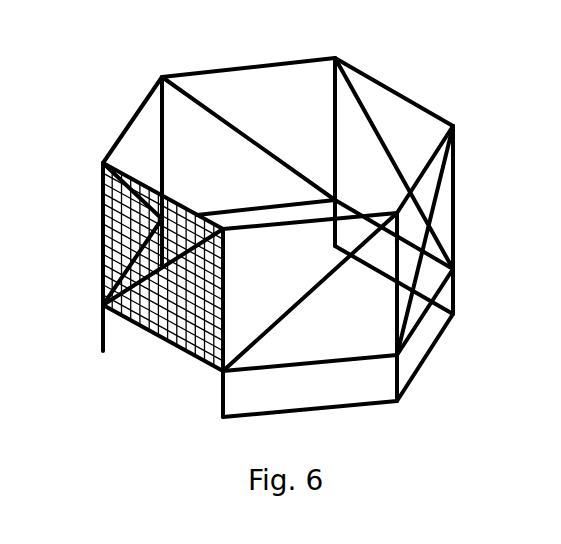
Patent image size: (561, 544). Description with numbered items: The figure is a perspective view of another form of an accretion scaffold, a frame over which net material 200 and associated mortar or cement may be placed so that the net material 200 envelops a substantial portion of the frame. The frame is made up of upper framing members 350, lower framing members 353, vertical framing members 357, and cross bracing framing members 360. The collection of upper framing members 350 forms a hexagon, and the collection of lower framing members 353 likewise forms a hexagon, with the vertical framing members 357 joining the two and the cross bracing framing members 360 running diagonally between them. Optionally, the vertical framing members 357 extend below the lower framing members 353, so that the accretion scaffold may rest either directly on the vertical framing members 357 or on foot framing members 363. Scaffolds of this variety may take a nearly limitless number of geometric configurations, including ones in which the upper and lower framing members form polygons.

The net material 200 is at (104, 302).
The upper framing members 350 is at (213, 72).
The lower framing members 353 is at (253, 209).
The vertical framing members 357 is at (334, 104).
The cross bracing framing members 360 is at (393, 162).
The foot framing members 363 is at (448, 318).